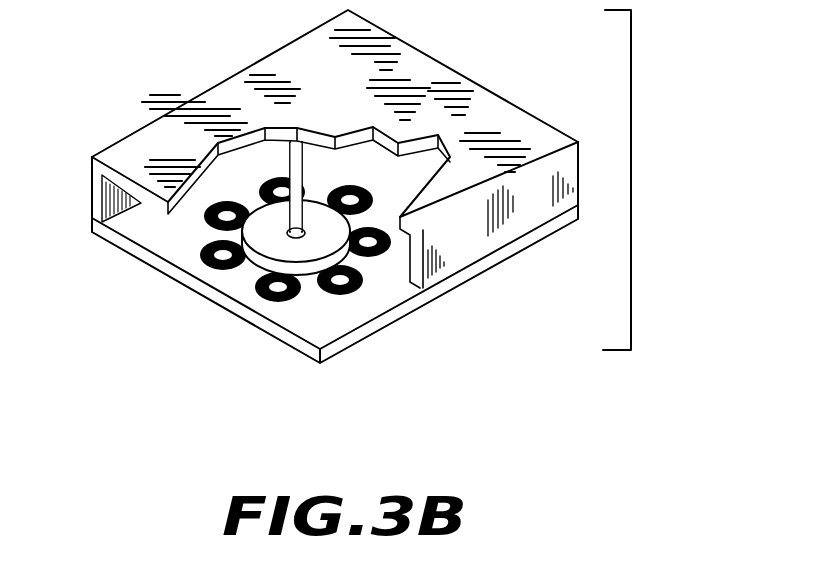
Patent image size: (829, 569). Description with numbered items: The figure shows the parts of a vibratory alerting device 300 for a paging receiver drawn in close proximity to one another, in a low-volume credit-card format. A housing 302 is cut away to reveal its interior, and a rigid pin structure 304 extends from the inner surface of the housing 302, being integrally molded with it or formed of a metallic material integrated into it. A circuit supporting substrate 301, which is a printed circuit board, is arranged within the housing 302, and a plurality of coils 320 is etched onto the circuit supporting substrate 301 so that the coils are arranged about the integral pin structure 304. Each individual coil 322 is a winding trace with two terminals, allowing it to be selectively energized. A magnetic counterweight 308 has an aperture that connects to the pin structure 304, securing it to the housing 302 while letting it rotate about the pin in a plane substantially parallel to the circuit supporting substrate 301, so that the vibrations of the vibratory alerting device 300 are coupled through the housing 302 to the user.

The vibratory alerting device 300 is at (631, 207).
The circuit supporting substrate 301 is at (352, 320).
The housing 302 is at (149, 154).
The pin structure 304 is at (307, 164).
The magnetic counterweight 308 is at (284, 245).
The plurality of coils 320 is at (307, 300).
The coil 322 is at (366, 275).